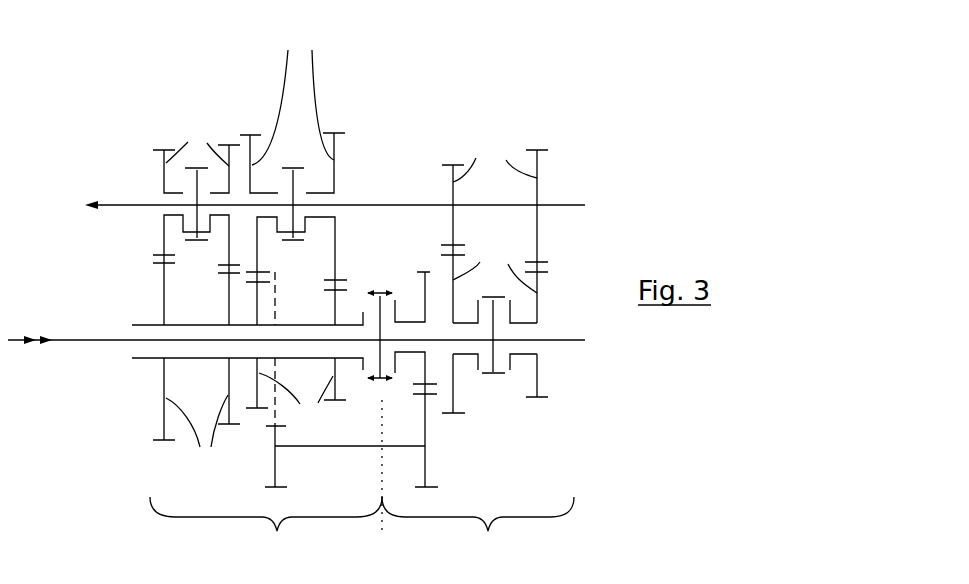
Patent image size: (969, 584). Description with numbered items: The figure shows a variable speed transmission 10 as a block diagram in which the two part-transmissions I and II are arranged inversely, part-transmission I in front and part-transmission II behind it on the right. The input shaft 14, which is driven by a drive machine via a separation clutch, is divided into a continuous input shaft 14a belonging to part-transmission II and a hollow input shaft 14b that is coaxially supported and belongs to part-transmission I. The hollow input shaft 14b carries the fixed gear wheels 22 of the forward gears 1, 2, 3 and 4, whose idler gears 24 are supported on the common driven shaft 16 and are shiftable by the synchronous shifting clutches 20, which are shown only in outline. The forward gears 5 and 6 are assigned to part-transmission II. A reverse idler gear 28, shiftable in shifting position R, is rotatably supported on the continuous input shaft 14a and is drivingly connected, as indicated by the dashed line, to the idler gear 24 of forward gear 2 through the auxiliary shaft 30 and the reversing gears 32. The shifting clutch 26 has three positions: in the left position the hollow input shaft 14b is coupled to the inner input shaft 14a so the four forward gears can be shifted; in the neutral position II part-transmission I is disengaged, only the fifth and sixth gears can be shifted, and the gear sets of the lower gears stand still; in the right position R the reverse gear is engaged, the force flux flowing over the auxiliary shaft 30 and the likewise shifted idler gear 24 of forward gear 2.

The variable speed transmission 10 is at (570, 70).
The driven shaft 16 is at (372, 203).
The input shaft 14 is at (116, 366).
The continuous input shaft 14a is at (100, 337).
The hollow input shaft 14b is at (302, 323).
The forward gear 1 is at (339, 118).
The forward gear 2 is at (259, 125).
The forward gear 3 is at (229, 137).
The forward gear 4 is at (161, 145).
The forward gear 5 is at (536, 138).
The forward gear 6 is at (453, 153).
The synchronous shifting clutch 20 is at (295, 154).
The fixed gear wheel 22 is at (351, 305).
The idler gear 24 is at (351, 156).
The shifting clutch 26 is at (383, 404).
The idler gear 28 is at (426, 285).
The auxiliary shaft 30 is at (340, 447).
The reversing gears 32 is at (273, 457).